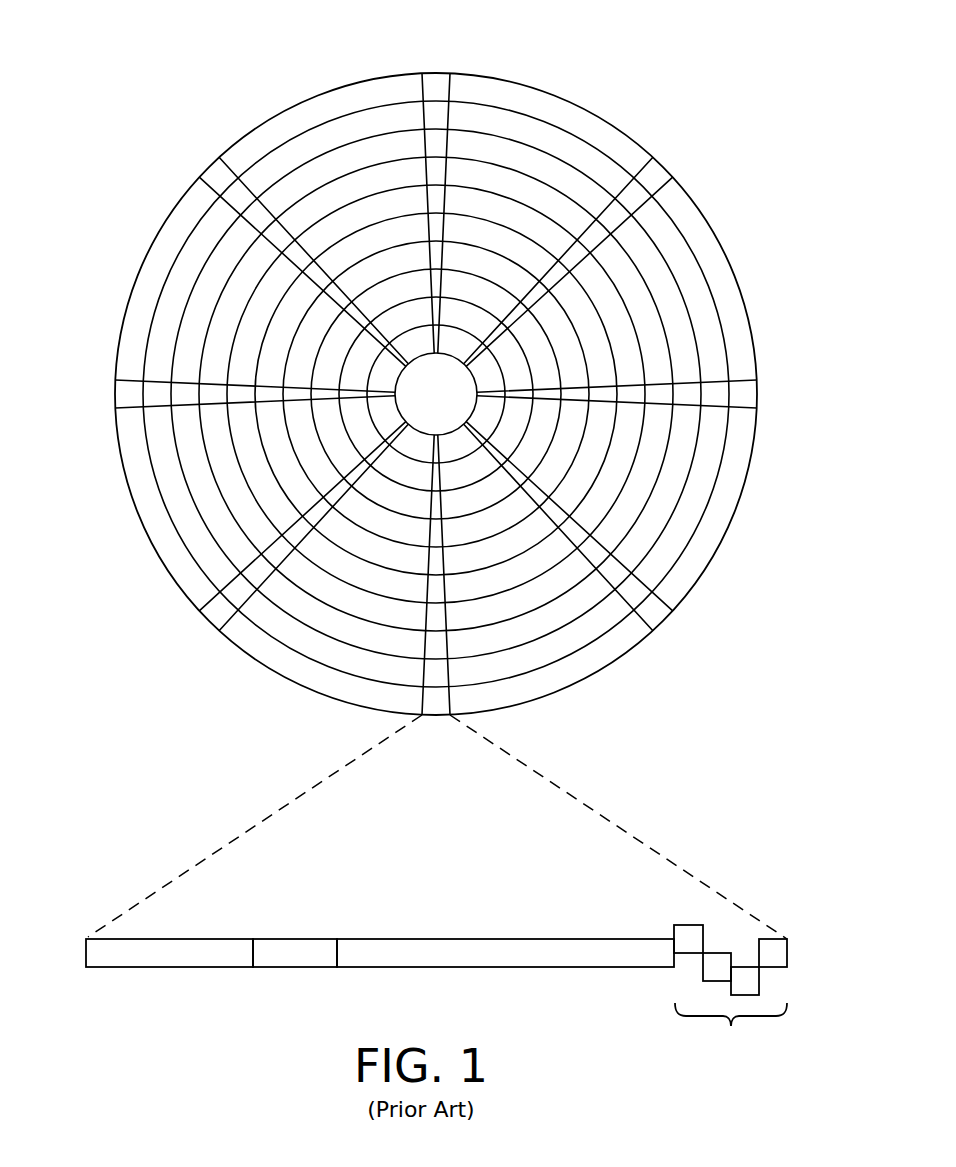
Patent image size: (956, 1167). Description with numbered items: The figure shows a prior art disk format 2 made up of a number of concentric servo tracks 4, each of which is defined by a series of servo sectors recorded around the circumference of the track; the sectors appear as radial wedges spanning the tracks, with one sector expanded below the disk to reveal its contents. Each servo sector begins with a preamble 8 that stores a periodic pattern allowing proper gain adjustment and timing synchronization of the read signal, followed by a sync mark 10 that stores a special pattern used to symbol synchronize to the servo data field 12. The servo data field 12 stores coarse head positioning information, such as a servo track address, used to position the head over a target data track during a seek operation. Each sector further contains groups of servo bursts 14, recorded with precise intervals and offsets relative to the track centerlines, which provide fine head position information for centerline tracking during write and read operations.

The disk format 2 is at (190, 70).
The servo tracks 4 is at (546, 134).
The preamble 8 is at (150, 967).
The sync mark 10 is at (293, 967).
The servo data field 12 is at (493, 967).
The servo bursts 14 is at (650, 902).